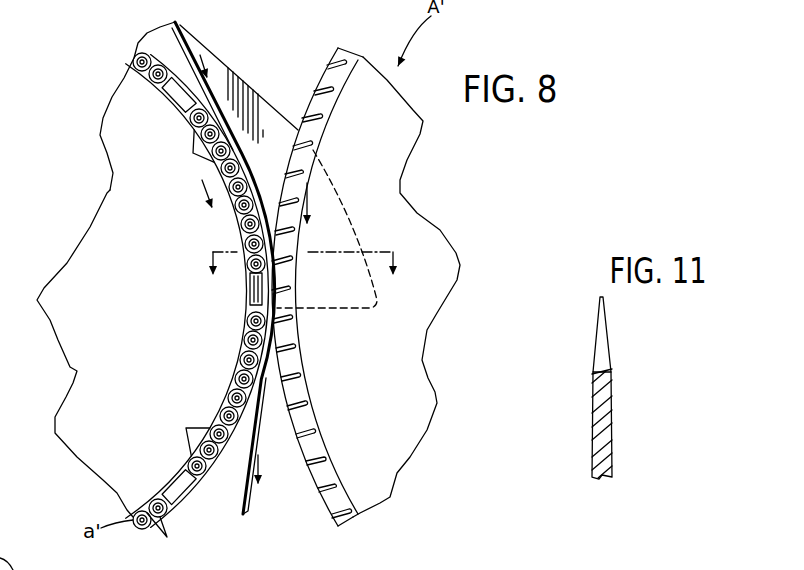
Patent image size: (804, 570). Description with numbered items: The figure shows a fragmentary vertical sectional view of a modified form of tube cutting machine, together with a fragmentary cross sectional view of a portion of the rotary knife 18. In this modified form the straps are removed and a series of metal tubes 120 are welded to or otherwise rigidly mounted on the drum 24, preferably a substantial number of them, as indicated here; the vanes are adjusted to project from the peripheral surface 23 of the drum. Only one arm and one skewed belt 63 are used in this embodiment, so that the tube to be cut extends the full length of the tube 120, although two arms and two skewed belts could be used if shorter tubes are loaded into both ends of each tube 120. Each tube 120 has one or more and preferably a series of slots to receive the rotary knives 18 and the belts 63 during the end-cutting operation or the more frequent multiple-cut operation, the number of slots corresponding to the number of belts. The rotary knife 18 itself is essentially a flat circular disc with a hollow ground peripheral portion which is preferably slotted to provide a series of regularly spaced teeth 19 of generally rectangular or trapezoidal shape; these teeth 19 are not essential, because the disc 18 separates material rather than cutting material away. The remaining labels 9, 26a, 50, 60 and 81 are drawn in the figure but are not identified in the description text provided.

In FIG. 8, the section line 9- 9 is at (306, 260).
In FIG. 8, the rotary knife 18 is at (410, 147).
In FIG. 11, the rotary knife 18 is at (603, 436).
In FIG. 11, the teeth 19 is at (602, 340).
In FIG. 8, the peripheral surface 23 is at (240, 368).
In FIG. 8, the drum 24 is at (60, 327).
In FIG. 8, the chain link block 26a is at (180, 100).
In FIG. 8, the housing 50 is at (101, 152).
In FIG. 8, the slotted sector member 60 is at (372, 456).
In FIG. 8, the skewed belt 63 is at (195, 40).
In FIG. 8, the mounting bracket 81 is at (246, 82).
In FIG. 8, the metal tube 120 is at (146, 52).